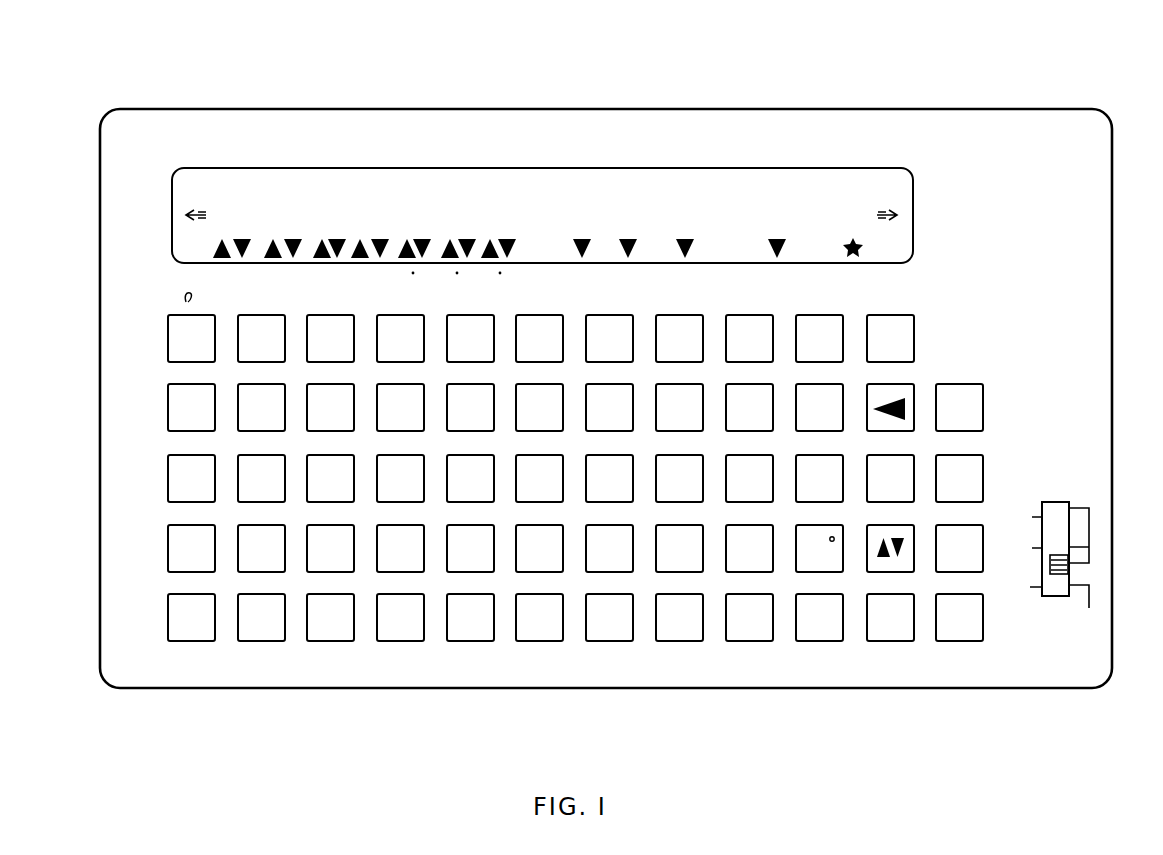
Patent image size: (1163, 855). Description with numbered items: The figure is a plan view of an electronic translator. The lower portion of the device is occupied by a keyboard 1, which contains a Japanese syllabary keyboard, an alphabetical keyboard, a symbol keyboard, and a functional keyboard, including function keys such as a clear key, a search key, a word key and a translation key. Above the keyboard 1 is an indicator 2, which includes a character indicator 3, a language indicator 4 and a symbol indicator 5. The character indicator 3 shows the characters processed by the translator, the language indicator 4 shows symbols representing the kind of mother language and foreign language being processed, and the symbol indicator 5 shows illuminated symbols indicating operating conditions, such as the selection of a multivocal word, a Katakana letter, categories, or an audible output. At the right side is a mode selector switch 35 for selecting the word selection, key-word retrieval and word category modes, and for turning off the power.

The keyboard 1 is at (515, 497).
The indicator 2 is at (673, 188).
The character indicator 3 is at (484, 186).
The language indicator 4 is at (335, 227).
The symbol indicator 5 is at (782, 233).
The mode selector switch 35 is at (1069, 577).